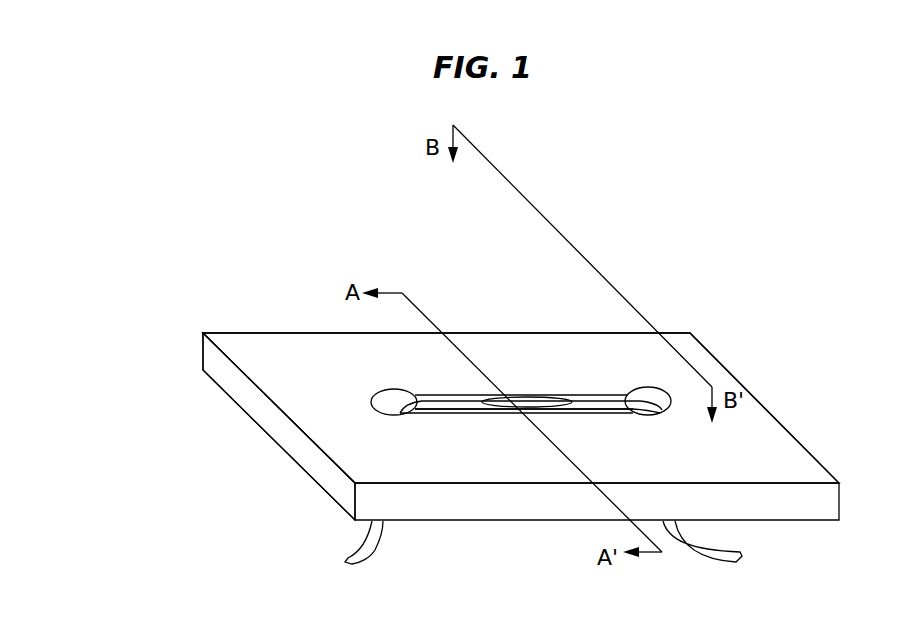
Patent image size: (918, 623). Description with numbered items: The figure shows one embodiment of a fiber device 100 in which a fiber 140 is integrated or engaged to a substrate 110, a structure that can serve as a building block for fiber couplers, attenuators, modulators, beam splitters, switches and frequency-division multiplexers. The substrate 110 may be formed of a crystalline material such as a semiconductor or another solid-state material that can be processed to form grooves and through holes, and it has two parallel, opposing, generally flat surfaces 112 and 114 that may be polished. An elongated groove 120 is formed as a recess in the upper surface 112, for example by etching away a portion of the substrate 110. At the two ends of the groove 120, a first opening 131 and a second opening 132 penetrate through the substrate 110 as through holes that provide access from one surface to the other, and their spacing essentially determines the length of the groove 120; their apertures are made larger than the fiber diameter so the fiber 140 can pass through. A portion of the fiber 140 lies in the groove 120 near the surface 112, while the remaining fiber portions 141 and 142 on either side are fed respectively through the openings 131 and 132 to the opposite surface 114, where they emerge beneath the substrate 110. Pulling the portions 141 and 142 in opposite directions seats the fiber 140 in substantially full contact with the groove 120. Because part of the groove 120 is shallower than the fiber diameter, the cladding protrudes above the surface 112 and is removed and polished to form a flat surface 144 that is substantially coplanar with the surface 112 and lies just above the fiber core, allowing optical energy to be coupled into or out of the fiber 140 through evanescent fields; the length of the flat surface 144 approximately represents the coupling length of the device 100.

The fiber device 100 is at (268, 195).
The substrate 110 is at (206, 363).
The substrate surface 112 is at (248, 350).
The substrate surface 114 is at (240, 407).
The elongated groove 120 is at (478, 394).
The first opening 131 is at (390, 408).
The second opening 132 is at (668, 405).
The fiber 140 is at (598, 403).
The fiber portion 141 is at (376, 549).
The fiber portion 142 is at (728, 562).
The flat surface 144 is at (533, 403).